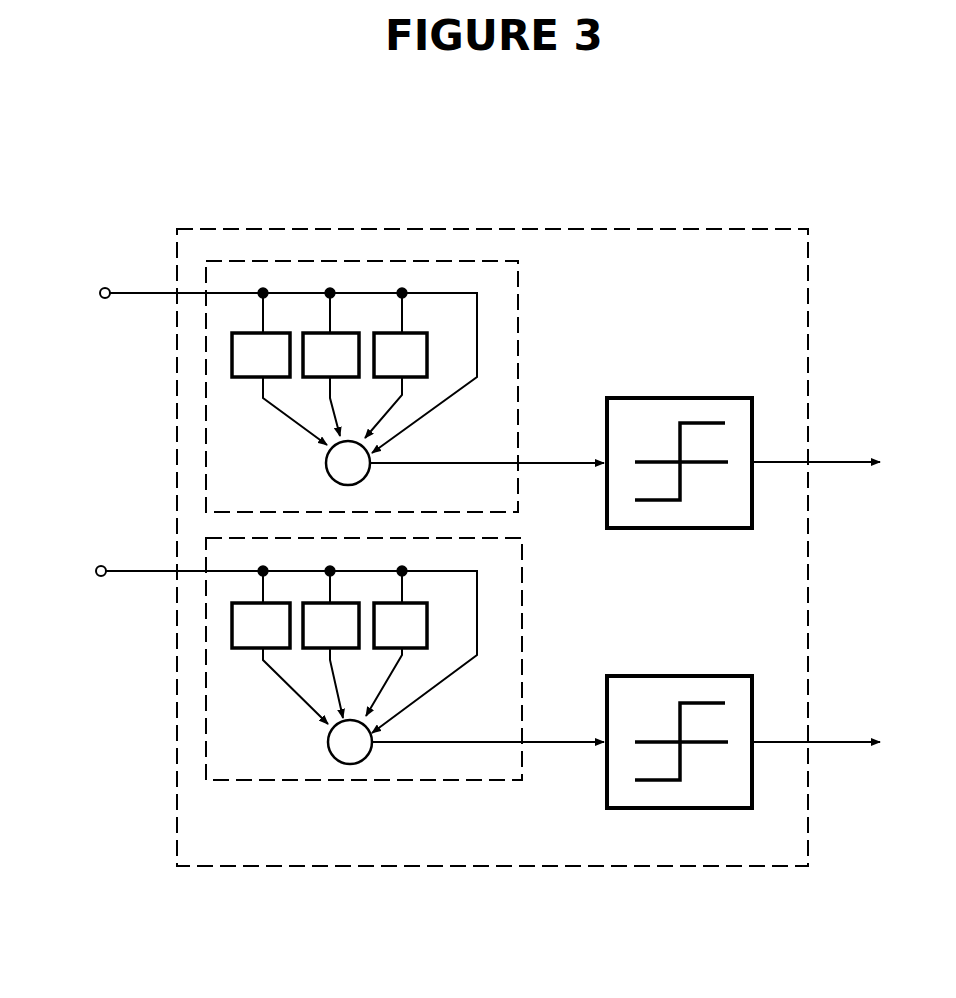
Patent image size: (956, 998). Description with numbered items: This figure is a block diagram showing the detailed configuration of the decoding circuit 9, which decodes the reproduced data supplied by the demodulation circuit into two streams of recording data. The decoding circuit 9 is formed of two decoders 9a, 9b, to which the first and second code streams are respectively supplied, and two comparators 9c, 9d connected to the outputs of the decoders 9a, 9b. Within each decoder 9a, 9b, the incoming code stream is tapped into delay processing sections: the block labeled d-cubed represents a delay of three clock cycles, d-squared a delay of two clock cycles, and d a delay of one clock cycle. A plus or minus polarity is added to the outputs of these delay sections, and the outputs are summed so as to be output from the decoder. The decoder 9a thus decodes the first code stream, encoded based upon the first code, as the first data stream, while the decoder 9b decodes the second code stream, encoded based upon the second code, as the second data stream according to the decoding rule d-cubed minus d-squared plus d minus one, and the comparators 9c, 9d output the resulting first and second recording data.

The decoding circuit 9 is at (415, 228).
The decoder 9a is at (518, 346).
The decoder 9b is at (522, 631).
The comparator 9c is at (700, 398).
The comparator 9d is at (698, 676).